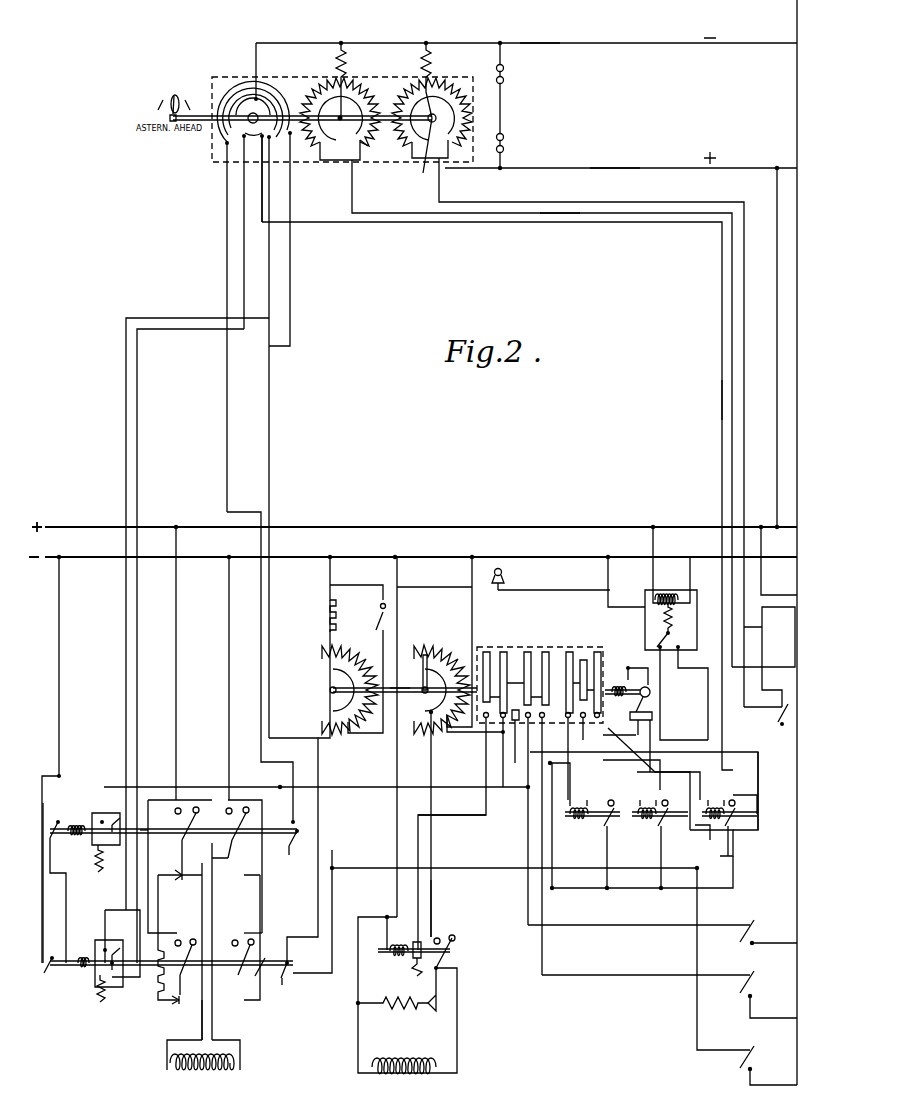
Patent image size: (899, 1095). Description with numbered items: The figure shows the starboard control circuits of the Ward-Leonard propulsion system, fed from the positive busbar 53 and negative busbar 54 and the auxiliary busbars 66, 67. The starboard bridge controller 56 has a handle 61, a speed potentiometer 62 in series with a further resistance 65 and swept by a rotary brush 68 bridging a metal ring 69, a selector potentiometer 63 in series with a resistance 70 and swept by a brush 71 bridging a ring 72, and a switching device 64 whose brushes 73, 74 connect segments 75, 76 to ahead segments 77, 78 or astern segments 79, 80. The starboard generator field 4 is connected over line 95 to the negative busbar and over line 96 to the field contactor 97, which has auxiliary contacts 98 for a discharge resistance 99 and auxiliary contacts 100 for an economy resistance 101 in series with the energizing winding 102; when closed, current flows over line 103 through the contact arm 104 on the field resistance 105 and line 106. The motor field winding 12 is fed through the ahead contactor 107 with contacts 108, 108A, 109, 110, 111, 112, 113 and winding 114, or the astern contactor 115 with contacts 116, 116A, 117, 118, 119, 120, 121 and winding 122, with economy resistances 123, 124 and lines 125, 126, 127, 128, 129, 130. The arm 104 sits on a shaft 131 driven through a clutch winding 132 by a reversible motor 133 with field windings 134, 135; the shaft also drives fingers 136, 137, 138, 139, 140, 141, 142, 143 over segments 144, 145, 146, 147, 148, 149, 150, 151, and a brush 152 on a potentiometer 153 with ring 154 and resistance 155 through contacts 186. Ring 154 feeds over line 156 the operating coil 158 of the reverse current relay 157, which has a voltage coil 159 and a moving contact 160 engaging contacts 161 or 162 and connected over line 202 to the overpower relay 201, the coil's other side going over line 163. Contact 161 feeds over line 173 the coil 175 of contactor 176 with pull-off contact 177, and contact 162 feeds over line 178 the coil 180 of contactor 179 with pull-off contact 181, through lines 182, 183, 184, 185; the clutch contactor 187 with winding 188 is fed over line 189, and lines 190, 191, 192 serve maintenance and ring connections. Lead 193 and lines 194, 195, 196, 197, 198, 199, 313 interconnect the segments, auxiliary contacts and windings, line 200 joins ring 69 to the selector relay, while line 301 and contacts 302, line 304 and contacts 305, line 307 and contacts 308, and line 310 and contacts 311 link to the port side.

The starboard generator field 4 is at (407, 1064).
The starboard motor field winding 12 is at (240, 1062).
The positive busbar 53 is at (80, 527).
The negative busbar 54 is at (92, 557).
The starboard bridge controller 56 is at (473, 77).
The handle 61 is at (170, 98).
The speed potentiometer 62 is at (364, 92).
The selector potentiometer 63 is at (452, 92).
The switching device 64 is at (273, 94).
The further resistance 65 is at (345, 55).
The auxiliary power supply busbar 66 is at (604, 170).
The auxiliary power supply busbar 67 is at (532, 43).
The rotary brush 68 is at (353, 165).
The metal ring 69 is at (372, 150).
The resistance 70 is at (430, 62).
The rotary brush 71 is at (431, 156).
The metal ring 72 is at (441, 165).
The rotary brush 73 is at (257, 62).
The rotary brush 74 is at (243, 137).
The segment 75 is at (250, 98).
The segment 76 is at (263, 137).
The ahead segment 77 is at (283, 104).
The ahead segment 78 is at (289, 137).
The astern segment 79 is at (226, 96).
The astern segment 80 is at (226, 144).
The line 95 is at (397, 868).
The line 96 is at (458, 1040).
The field contactor 97 is at (440, 939).
The auxiliary contacts 98 is at (432, 1005).
The discharge resistance 99 is at (392, 1005).
The auxiliary contacts 100 is at (415, 943).
The economy resistance 101 is at (413, 974).
The contactor energizing winding 102 is at (388, 957).
The line 103 is at (434, 900).
The contact arm 104 is at (422, 672).
The field resistance 105 is at (418, 652).
The line 106 is at (472, 606).
The ahead contactor 107 is at (234, 842).
The main current contacts 108 is at (180, 808).
The main contacts 108A is at (180, 874).
The main current contacts 109 is at (230, 808).
The auxiliary contacts 110 is at (312, 832).
The auxiliary contacts 111 is at (56, 822).
The changeover contacts 112 is at (112, 812).
The changeover contacts 113 is at (100, 810).
The actuating winding 114 is at (82, 840).
The astern contactor 115 is at (258, 962).
The main contacts 116 is at (178, 940).
The main contacts 116A is at (177, 1000).
The main contacts 117 is at (236, 940).
The auxiliary contacts 118 is at (287, 968).
The auxiliary contacts 119 is at (46, 975).
The changeover contacts 120 is at (118, 978).
The changeover contacts 121 is at (106, 944).
The actuating winding 122 is at (80, 970).
The economy resistance 123 is at (106, 865).
The economy resistance 124 is at (108, 998).
The line 125 is at (176, 632).
The line 126 is at (212, 1010).
The line 127 is at (212, 868).
The line 128 is at (229, 670).
The line 129 is at (148, 842).
The line 130 is at (262, 890).
The shaft 131 is at (402, 690).
The operating winding 132 is at (638, 700).
The reversible electric motor 133 is at (658, 690).
The field winding 134 is at (650, 722).
The field winding 135 is at (652, 716).
The contact finger 136 is at (486, 730).
The contact finger 137 is at (500, 732).
The contact finger 138 is at (505, 735).
The contact finger 139 is at (545, 730).
The contact finger 140 is at (568, 732).
The contact finger 141 is at (583, 735).
The contact finger 142 is at (628, 735).
The contact finger 143 is at (636, 726).
The segment 144 is at (487, 652).
The segment 145 is at (505, 655).
The segment 146 is at (516, 724).
The segment 147 is at (530, 652).
The segment 148 is at (548, 655).
The segment 149 is at (572, 652).
The segment 150 is at (600, 668).
The segment 151 is at (601, 674).
The brush 152 is at (352, 616).
The potentiometer 153 is at (352, 660).
The metal ring 154 is at (340, 710).
The resistance 155 is at (330, 612).
The line 156 is at (430, 588).
The starboard reverse current relay 157 is at (764, 657).
The operating coil 158 is at (673, 616).
The voltage coil 159 is at (671, 566).
The moving contact 160 is at (661, 628).
The contact 161 is at (668, 646).
The contact 162 is at (680, 648).
The line 163 is at (781, 607).
The line 173 is at (648, 700).
The coil 175 is at (645, 822).
The contactor 176 is at (667, 826).
The pull-off auxiliary contact 177 is at (712, 822).
The line 178 is at (708, 724).
The contactor 179 is at (755, 792).
The coil 180 is at (736, 828).
The pull-off auxiliary contact 181 is at (757, 814).
The line 182 is at (731, 840).
The line 183 is at (730, 765).
The line 184 is at (720, 858).
The line 185 is at (758, 762).
The contacts 186 is at (382, 606).
The clutch contactor 187 is at (612, 826).
The winding 188 is at (578, 822).
The line 189 is at (578, 888).
The line 190 is at (482, 815).
The line 191 is at (722, 390).
The line 192 is at (397, 840).
The lead 193 is at (226, 254).
The line 194 is at (332, 906).
The line 195 is at (355, 858).
The line 196 is at (270, 455).
The line 197 is at (160, 330).
The line 198 is at (50, 873).
The line 199 is at (126, 440).
The line 200 is at (504, 213).
The overpower relay 201 is at (498, 588).
The line 202 is at (560, 590).
The line 301 is at (553, 213).
The contacts 302 is at (782, 712).
The line 304 is at (642, 925).
The contacts 305 is at (755, 933).
The line 307 is at (585, 978).
The contacts 308 is at (753, 990).
The line 310 is at (697, 1032).
The contacts 311 is at (755, 1064).
The line 313 is at (60, 632).